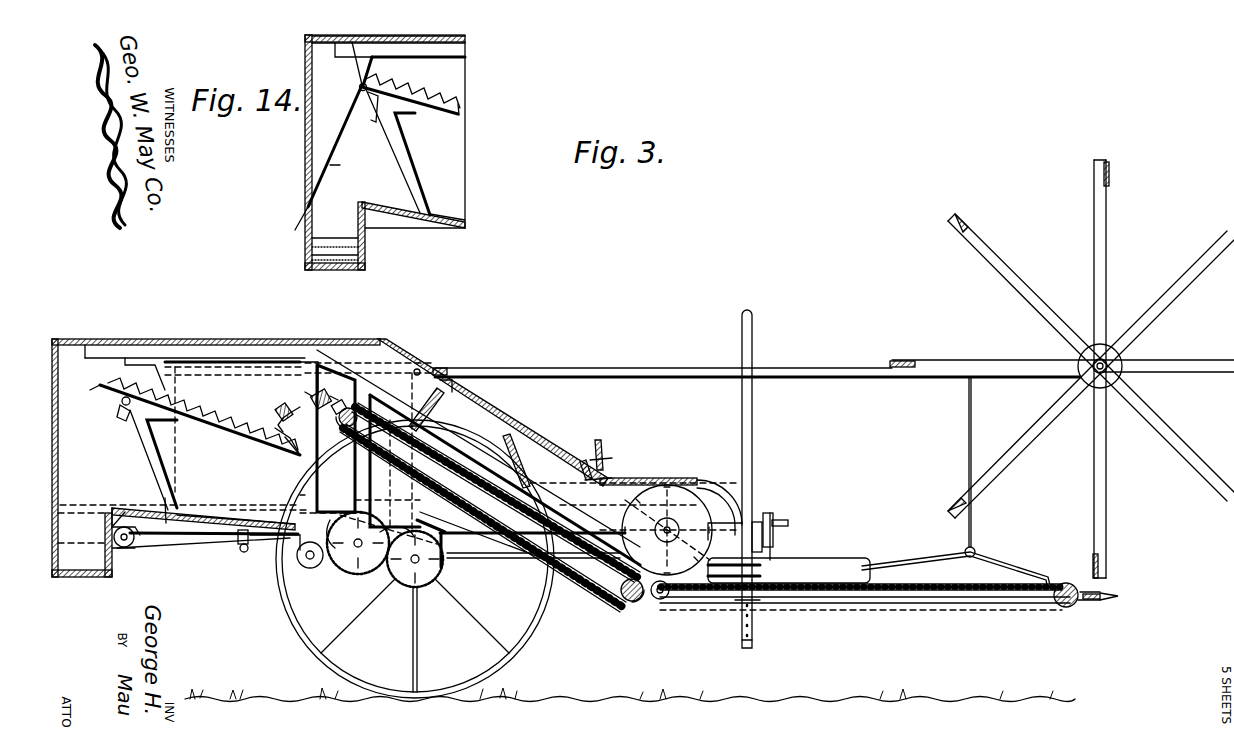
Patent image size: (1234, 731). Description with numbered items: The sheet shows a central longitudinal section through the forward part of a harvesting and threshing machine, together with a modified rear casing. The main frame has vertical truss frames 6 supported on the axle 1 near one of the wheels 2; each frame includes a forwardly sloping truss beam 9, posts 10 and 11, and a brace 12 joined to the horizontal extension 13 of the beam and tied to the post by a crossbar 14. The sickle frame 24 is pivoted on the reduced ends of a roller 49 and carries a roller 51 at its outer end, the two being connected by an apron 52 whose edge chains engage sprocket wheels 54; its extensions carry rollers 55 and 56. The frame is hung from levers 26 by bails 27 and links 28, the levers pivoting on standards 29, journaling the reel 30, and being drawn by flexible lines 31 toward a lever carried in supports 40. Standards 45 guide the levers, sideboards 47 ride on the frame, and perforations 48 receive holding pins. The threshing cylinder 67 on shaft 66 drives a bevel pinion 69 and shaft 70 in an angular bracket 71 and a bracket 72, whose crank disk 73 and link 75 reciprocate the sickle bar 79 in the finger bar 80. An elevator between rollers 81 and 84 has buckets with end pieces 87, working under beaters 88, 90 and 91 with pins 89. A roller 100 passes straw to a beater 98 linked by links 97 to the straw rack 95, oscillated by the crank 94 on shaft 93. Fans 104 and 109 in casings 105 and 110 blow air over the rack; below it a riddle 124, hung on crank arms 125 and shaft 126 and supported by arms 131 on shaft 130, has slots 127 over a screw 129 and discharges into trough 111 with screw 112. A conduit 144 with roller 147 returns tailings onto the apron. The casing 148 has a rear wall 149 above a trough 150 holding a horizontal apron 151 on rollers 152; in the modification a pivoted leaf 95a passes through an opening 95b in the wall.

In FIG. 3, the axle 1 is at (412, 555).
In FIG. 3, the wheel 2 is at (279, 608).
In FIG. 3, the vertical truss frame 6 is at (316, 348).
In FIG. 3, the truss beam 9 is at (463, 442).
In FIG. 3, the post 10 is at (358, 479).
In FIG. 3, the post 11 is at (312, 481).
In FIG. 14, the brace 12 is at (408, 146).
In FIG. 3, the brace 12 is at (140, 440).
In FIG. 14, the horizontal extension 13 is at (441, 58).
In FIG. 3, the horizontal extension 13 is at (222, 346).
In FIG. 14, the crossbar 14 is at (462, 102).
In FIG. 3, the crossbar 14 is at (228, 415).
In FIG. 3, the sickle frame 24 is at (840, 604).
In FIG. 3, the lever 26 is at (820, 367).
In FIG. 3, the bail 27 is at (990, 556).
In FIG. 3, the link 28 is at (966, 436).
In FIG. 3, the standard 29 is at (450, 368).
In FIG. 3, the reel 30 is at (1106, 273).
In FIG. 3, the flexible line 31 is at (180, 456).
In FIG. 3, the support 40 is at (741, 642).
In FIG. 3, the standard 45 is at (753, 342).
In FIG. 3, the sideboard 47 is at (800, 560).
In FIG. 3, the perforation 48 is at (753, 628).
In FIG. 3, the roller 49 is at (660, 600).
In FIG. 3, the roller 51 is at (1080, 605).
In FIG. 3, the apron 52 is at (832, 582).
In FIG. 3, the sprocket wheel 54 is at (1066, 582).
In FIG. 3, the roller 55 is at (505, 535).
In FIG. 3, the roller 56 is at (410, 462).
In FIG. 3, the shaft 66 is at (656, 527).
In FIG. 3, the threshing cylinder 67 is at (670, 483).
In FIG. 3, the bevel pinion 69 is at (669, 519).
In FIG. 3, the shaft 70 is at (768, 518).
In FIG. 3, the angular bracket 71 is at (725, 541).
In FIG. 3, the bracket 72 is at (756, 520).
In FIG. 3, the crank disk 73 is at (774, 518).
In FIG. 3, the link 75 is at (775, 530).
In FIG. 3, the sickle bar 79 is at (1100, 593).
In FIG. 3, the finger bar 80 is at (1119, 596).
In FIG. 3, the roller 81 is at (626, 602).
In FIG. 3, the roller 84 is at (345, 430).
In FIG. 3, the end piece 87 is at (560, 578).
In FIG. 3, the beater 88 is at (616, 477).
In FIG. 3, the pin 89 is at (599, 470).
In FIG. 3, the beater 90 is at (522, 440).
In FIG. 3, the beater 91 is at (462, 393).
In FIG. 14, the shaft 93 is at (372, 106).
In FIG. 3, the shaft 93 is at (117, 413).
In FIG. 14, the crank 94 is at (359, 96).
In FIG. 3, the crank 94 is at (120, 400).
In FIG. 14, the straw rack 95 is at (390, 86).
In FIG. 3, the straw rack 95 is at (135, 388).
In FIG. 14, the pivotally suspended leaf 95a is at (333, 170).
In FIG. 14, the opening 95b is at (305, 176).
In FIG. 3, the link 97 is at (283, 447).
In FIG. 3, the beater 98 is at (283, 415).
In FIG. 3, the roller 100 is at (330, 392).
In FIG. 3, the fan 104 is at (410, 590).
In FIG. 3, the casing 105 is at (432, 590).
In FIG. 3, the fan 109 is at (345, 572).
In FIG. 3, the casing 110 is at (364, 574).
In FIG. 3, the trough 111 is at (308, 569).
In FIG. 3, the screw 112 is at (296, 550).
In FIG. 14, the riddle 124 is at (460, 218).
In FIG. 3, the riddle 124 is at (225, 514).
In FIG. 3, the crank arm 125 is at (172, 512).
In FIG. 3, the shaft 126 is at (160, 543).
In FIG. 14, the slot 127 is at (375, 204).
In FIG. 3, the slot 127 is at (128, 510).
In FIG. 3, the screw 129 is at (114, 535).
In FIG. 3, the shaft 130 is at (244, 553).
In FIG. 3, the arm 131 is at (240, 545).
In FIG. 3, the conduit 144 is at (195, 537).
In FIG. 3, the roller 147 is at (737, 480).
In FIG. 14, the casing 148 is at (466, 38).
In FIG. 3, the casing 148 is at (405, 352).
In FIG. 14, the vertical wall 149 is at (305, 138).
In FIG. 3, the vertical wall 149 is at (58, 455).
In FIG. 14, the trough 150 is at (333, 271).
In FIG. 3, the trough 150 is at (82, 578).
In FIG. 14, the horizontal apron 151 is at (320, 243).
In FIG. 14, the roller 152 is at (335, 255).